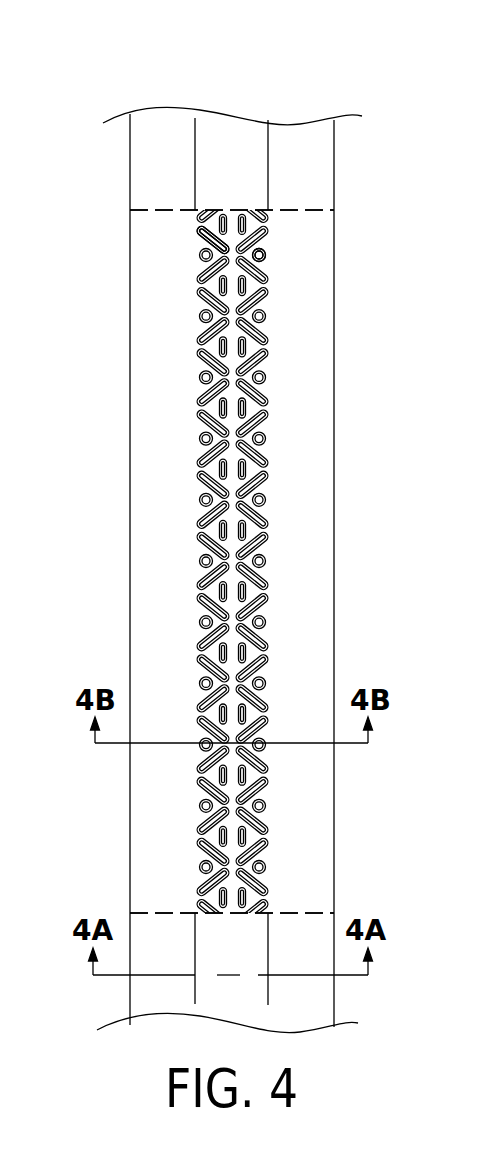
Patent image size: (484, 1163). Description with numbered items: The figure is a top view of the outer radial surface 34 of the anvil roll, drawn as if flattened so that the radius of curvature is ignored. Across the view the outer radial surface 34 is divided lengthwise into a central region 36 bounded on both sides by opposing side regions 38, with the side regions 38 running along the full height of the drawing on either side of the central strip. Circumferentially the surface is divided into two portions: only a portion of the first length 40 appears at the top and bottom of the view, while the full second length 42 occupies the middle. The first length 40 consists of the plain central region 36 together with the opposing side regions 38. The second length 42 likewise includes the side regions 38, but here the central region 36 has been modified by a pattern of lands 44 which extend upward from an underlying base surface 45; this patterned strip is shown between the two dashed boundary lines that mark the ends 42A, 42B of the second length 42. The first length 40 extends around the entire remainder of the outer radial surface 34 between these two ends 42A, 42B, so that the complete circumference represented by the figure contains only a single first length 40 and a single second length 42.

The outer radial surface 34 is at (229, 70).
The central region 36 is at (242, 137).
The side regions 38 is at (305, 200).
The first length 40 is at (372, 119).
The second length 42 is at (359, 484).
The first end of second length 42A is at (233, 210).
The second end of second length 42B is at (226, 912).
The lands 44 is at (263, 258).
The base surface 45 is at (195, 247).